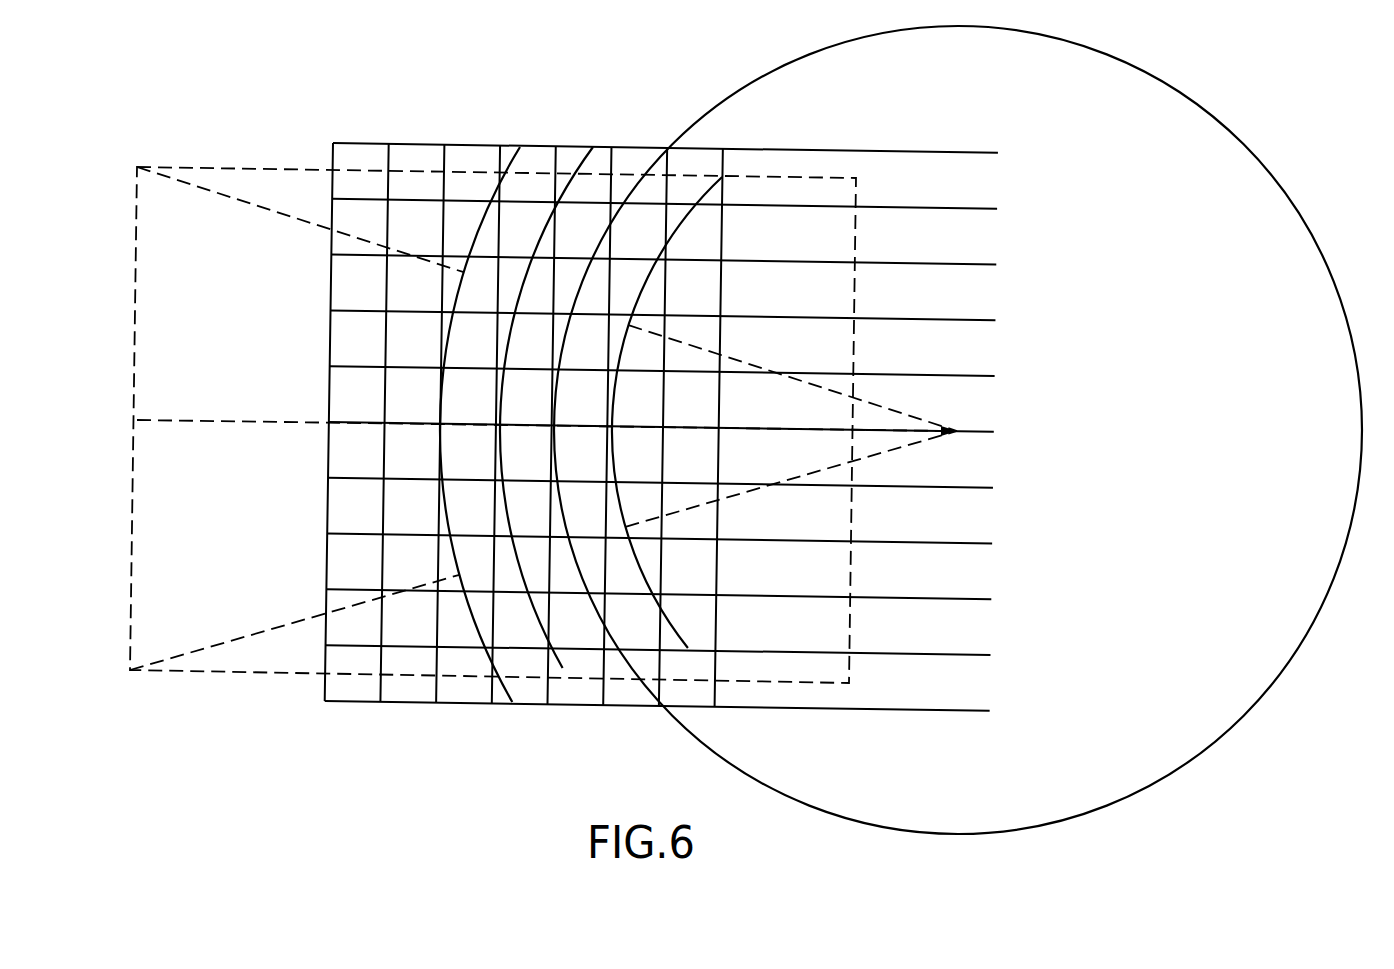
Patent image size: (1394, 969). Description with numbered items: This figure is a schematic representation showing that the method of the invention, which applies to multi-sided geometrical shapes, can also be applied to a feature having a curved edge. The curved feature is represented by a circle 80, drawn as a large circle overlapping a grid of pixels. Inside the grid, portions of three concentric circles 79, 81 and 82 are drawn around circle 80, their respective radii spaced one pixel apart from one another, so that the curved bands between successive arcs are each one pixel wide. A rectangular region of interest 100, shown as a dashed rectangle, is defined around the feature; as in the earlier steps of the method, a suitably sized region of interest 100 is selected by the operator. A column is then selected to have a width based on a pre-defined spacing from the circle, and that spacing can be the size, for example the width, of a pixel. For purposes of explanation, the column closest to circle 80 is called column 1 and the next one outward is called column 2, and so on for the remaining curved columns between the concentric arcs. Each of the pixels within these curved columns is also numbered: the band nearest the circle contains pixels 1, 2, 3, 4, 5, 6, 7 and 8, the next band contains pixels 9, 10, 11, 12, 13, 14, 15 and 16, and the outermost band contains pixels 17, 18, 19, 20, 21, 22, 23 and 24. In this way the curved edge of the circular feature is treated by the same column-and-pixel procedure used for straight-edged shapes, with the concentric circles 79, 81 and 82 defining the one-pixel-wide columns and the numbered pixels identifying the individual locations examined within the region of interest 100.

The concentric circle portion 79 is at (724, 186).
The circle 80 is at (724, 99).
The concentric circle portion 81 is at (578, 172).
The concentric circle portion 82 is at (512, 166).
The rectangular region of interest 100 is at (200, 671).
The column closest to the circle 1 is at (578, 232).
The next column 2 is at (590, 288).
The zone 3 is at (583, 343).
The zone 4 is at (580, 398).
The zone 5 is at (580, 452).
The zone 6 is at (582, 508).
The zone 7 is at (587, 560).
The zone 8 is at (575, 620).
The zone 9 is at (521, 232).
The zone 10 is at (535, 288).
The zone 11 is at (528, 343).
The zone 12 is at (516, 390).
The zone 13 is at (512, 458).
The zone 14 is at (523, 508).
The zone 15 is at (533, 558).
The zone 16 is at (512, 620).
The zone 17 is at (465, 232).
The zone 18 is at (478, 288).
The zone 19 is at (476, 343).
The zone 20 is at (477, 390).
The zone 21 is at (466, 458).
The zone 22 is at (466, 508).
The zone 23 is at (476, 558).
The zone 24 is at (460, 617).